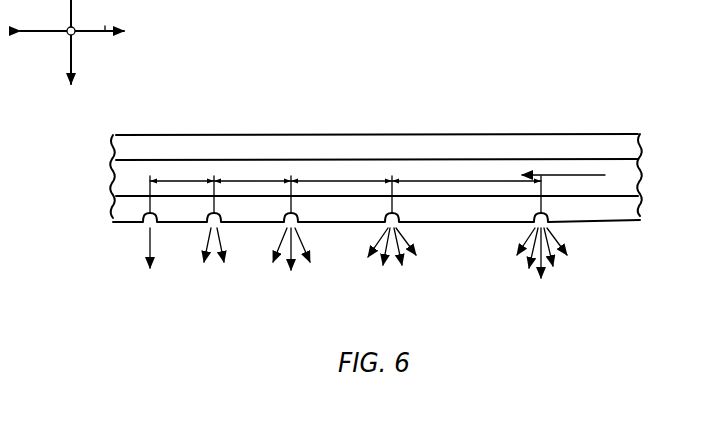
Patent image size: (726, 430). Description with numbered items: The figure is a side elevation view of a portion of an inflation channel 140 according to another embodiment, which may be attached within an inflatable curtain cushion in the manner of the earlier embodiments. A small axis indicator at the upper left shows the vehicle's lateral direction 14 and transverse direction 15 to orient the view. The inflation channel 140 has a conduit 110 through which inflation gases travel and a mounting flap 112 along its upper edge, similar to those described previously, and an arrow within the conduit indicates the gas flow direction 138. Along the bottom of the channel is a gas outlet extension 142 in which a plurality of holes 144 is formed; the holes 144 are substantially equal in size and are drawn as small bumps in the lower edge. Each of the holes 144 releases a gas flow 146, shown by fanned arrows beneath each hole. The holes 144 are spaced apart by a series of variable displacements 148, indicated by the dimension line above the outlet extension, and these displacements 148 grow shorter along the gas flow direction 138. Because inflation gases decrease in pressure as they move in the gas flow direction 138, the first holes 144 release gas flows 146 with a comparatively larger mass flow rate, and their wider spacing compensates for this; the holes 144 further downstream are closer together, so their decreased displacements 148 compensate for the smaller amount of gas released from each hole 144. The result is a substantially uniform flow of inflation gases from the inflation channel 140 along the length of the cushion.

The lateral direction 14 is at (75, 34).
The transverse direction 15 is at (105, 28).
The conduit 110 is at (412, 168).
The mounting flap 112 is at (538, 142).
The gas flow direction 138 is at (580, 175).
The inflation channel 140 is at (378, 166).
The gas outlet extension 142 is at (478, 210).
The holes 144 is at (141, 217).
The gas flow 146 is at (143, 250).
The variable displacements 148 is at (183, 181).